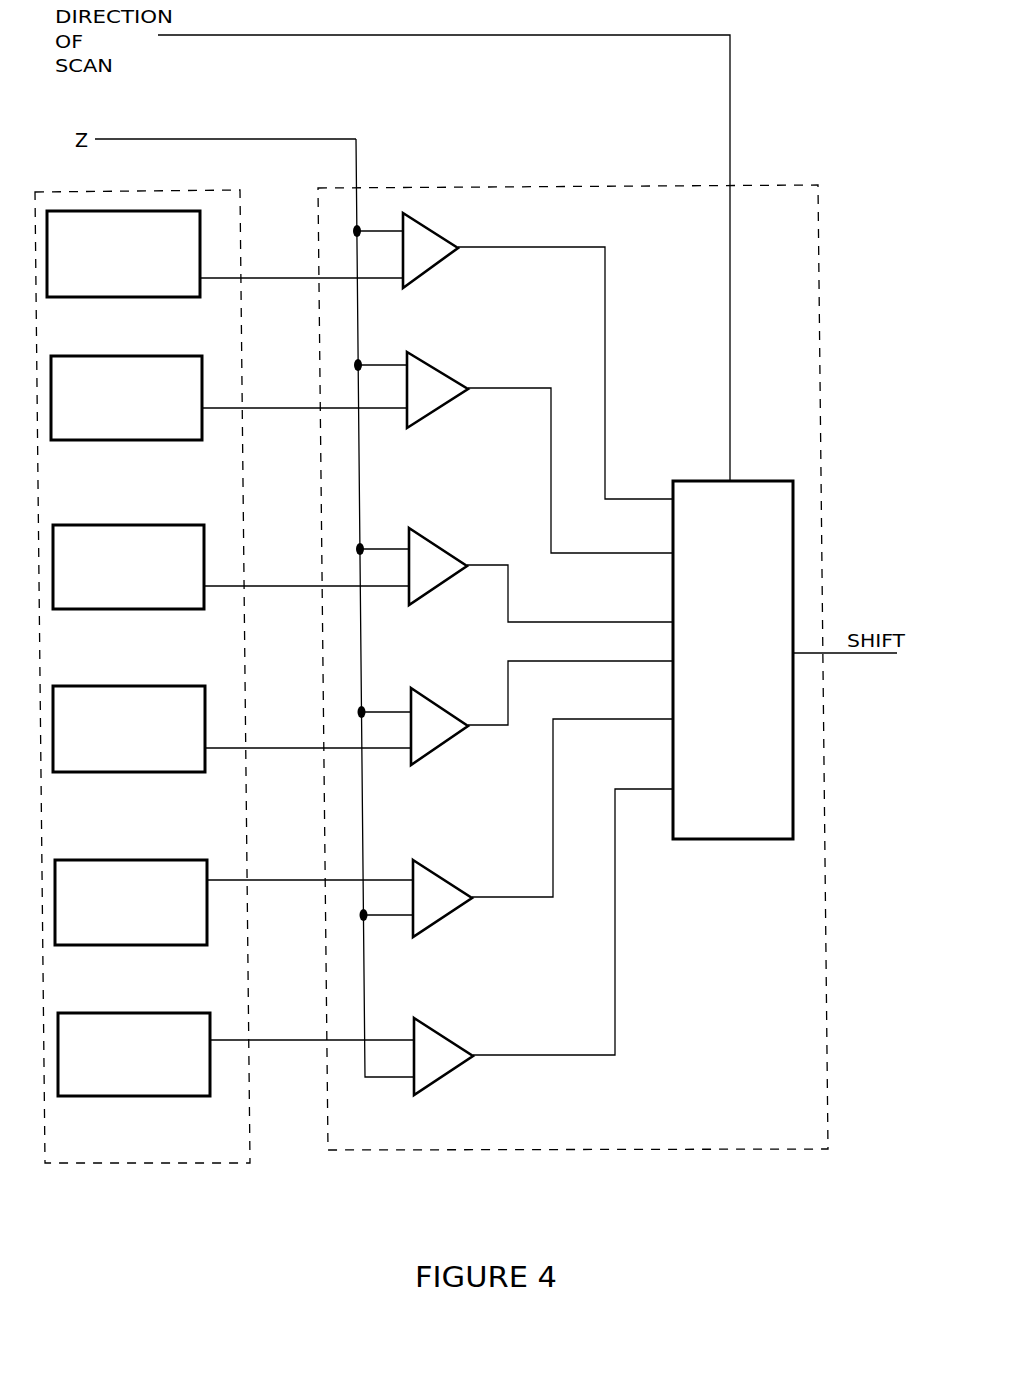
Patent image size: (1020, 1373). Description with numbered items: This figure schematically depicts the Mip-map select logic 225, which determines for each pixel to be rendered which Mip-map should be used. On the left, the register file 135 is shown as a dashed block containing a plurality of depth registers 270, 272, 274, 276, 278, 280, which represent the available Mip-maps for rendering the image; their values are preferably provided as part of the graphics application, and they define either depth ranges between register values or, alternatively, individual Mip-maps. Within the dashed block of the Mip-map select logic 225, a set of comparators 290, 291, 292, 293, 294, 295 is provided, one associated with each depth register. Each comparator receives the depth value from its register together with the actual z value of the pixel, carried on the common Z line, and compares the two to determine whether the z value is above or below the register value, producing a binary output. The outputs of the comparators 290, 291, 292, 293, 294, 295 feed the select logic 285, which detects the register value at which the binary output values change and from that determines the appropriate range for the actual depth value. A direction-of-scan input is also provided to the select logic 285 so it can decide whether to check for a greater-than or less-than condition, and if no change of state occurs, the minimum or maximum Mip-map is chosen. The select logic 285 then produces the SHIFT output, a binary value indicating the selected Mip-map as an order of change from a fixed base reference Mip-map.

The register file 135 is at (195, 1165).
The Mip-map select logic 225 is at (352, 1152).
The depth register 270 is at (118, 297).
The depth register 272 is at (122, 441).
The depth register 274 is at (124, 610).
The depth register 276 is at (128, 773).
The depth register 278 is at (135, 946).
The depth register 280 is at (130, 1097).
The select logic 285 is at (720, 840).
The comparator 290 is at (418, 284).
The comparator 291 is at (420, 420).
The comparator 292 is at (418, 600).
The comparator 293 is at (420, 760).
The comparator 294 is at (422, 932).
The comparator 295 is at (424, 1090).